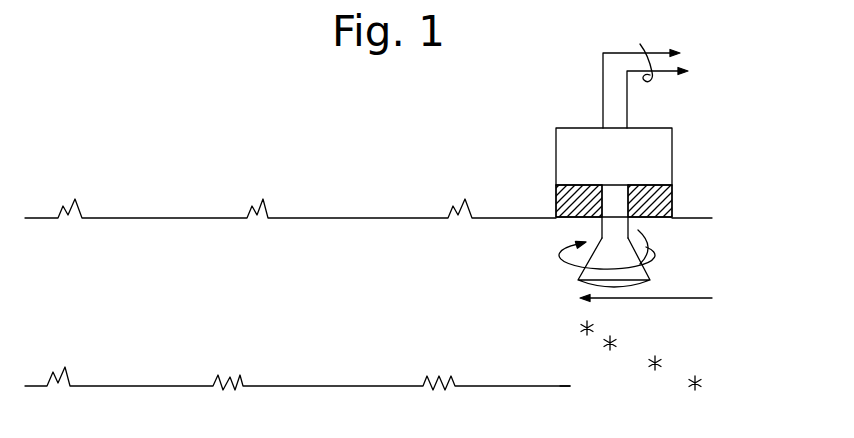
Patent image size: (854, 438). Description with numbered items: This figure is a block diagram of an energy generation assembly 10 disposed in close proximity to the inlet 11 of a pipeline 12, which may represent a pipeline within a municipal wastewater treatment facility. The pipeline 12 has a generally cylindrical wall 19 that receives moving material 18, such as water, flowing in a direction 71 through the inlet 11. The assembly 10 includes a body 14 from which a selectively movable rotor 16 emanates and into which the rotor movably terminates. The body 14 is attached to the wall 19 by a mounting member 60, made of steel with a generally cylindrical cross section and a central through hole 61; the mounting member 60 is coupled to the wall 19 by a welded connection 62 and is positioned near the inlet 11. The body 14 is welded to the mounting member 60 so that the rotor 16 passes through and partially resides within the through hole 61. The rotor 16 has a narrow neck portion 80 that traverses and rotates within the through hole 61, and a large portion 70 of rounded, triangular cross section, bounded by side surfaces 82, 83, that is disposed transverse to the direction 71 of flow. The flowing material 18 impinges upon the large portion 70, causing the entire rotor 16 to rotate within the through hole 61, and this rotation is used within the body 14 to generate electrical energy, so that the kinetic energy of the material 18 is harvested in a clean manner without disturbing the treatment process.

The energy generation assembly 10 is at (544, 118).
The inlet 11 is at (567, 365).
The pipeline 12 is at (330, 388).
The body 14 is at (566, 148).
The rotor 16 is at (642, 264).
The material 18 is at (611, 353).
The wall 19 is at (308, 218).
The mounting member 60 is at (645, 216).
The through hole 61 is at (598, 217).
The welded connection 62 is at (662, 218).
The large portion of the rotor 70 is at (578, 272).
The direction of flow 71 is at (685, 298).
The neck portion 80 is at (613, 192).
The side surface 82 is at (632, 265).
The side surface 83 is at (648, 237).